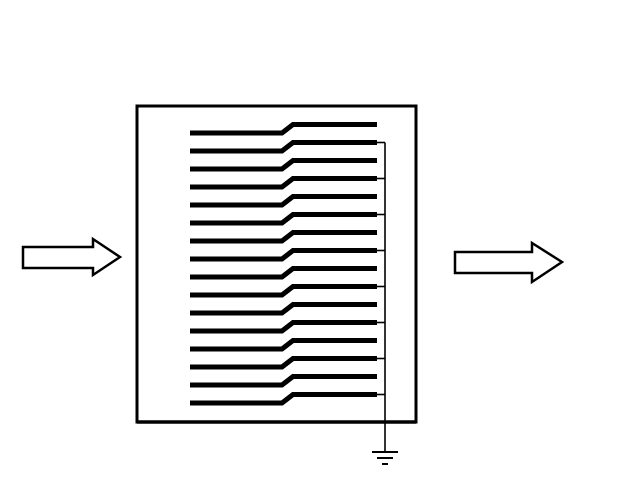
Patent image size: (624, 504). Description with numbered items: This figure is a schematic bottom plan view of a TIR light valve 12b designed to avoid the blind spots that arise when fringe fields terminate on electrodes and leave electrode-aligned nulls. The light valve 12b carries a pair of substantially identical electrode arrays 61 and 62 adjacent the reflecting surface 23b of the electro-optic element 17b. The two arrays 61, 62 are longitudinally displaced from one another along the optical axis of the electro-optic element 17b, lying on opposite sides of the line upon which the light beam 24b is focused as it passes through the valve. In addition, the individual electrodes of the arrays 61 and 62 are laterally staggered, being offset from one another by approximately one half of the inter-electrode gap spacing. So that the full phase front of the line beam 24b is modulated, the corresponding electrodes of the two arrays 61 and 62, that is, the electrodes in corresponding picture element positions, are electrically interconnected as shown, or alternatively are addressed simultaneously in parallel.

The light valve 12b is at (300, 88).
The electrode array 61 is at (234, 130).
The electrode array 62 is at (361, 121).
The reflecting surface 23b is at (144, 346).
The electro-optic element 17b is at (182, 423).
The light beam 24b is at (60, 250).